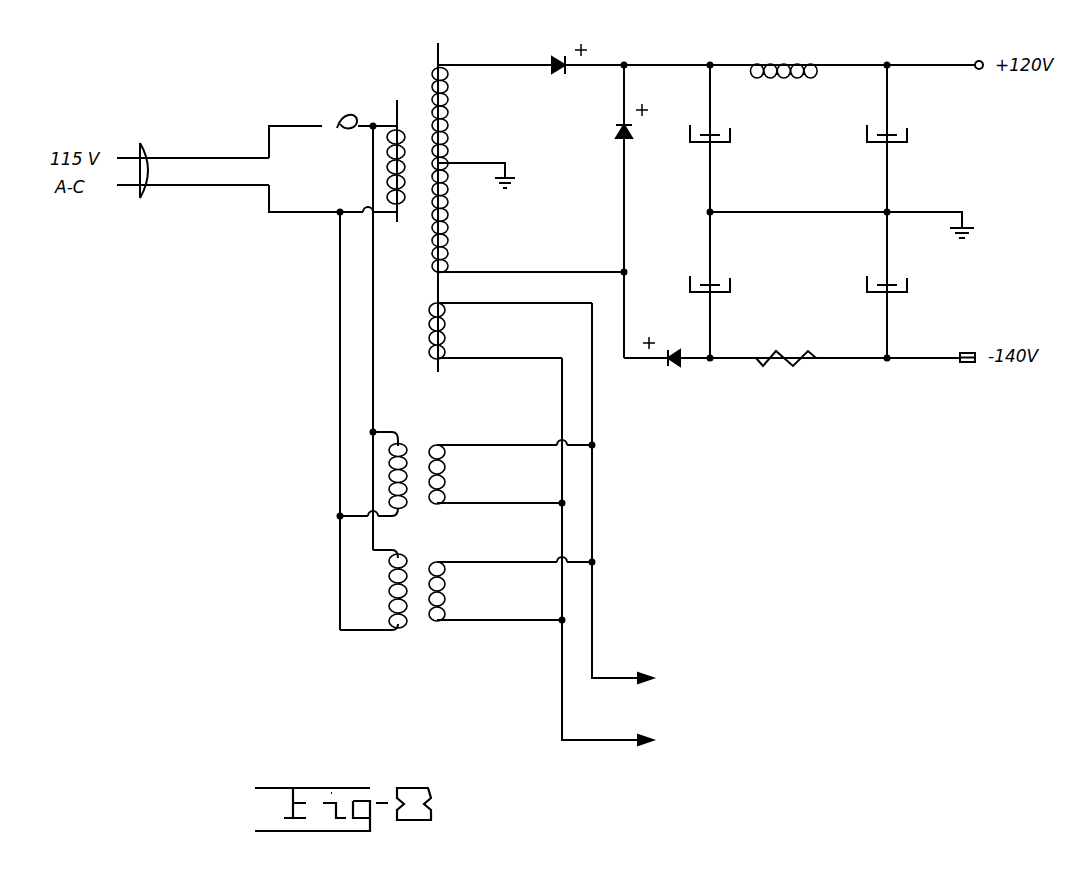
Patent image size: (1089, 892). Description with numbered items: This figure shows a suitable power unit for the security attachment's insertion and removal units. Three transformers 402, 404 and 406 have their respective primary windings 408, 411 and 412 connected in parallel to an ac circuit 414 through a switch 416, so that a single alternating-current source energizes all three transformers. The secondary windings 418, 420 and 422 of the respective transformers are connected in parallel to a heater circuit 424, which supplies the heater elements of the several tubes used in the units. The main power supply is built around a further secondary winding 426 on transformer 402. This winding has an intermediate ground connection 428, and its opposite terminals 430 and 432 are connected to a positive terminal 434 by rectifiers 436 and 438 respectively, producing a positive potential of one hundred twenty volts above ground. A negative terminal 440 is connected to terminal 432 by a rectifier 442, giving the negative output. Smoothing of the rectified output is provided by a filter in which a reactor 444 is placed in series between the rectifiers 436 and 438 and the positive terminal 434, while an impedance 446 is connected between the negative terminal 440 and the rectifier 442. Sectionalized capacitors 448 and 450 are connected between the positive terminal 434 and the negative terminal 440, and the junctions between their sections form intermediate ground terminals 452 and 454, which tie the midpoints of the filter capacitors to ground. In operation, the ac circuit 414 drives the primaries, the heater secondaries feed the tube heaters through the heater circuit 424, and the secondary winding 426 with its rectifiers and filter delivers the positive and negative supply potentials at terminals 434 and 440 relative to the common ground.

The transformer 402 is at (412, 264).
The transformer 404 is at (439, 421).
The transformer 406 is at (442, 609).
The primary winding 408 is at (388, 165).
The primary winding of second transformer 411 is at (386, 468).
The primary winding 412 is at (385, 592).
The ac circuit 414 is at (183, 188).
The switch 416 is at (312, 118).
The secondary winding 418 is at (429, 334).
The secondary winding 420 is at (448, 481).
The secondary winding 422 is at (445, 597).
The heater circuit 424 is at (618, 694).
The secondary winding 426 is at (449, 128).
The intermediate ground connection 428 is at (507, 168).
The terminal 430 is at (441, 63).
The terminal 432 is at (446, 272).
The positive terminal 434 is at (982, 60).
The rectifier 436 is at (556, 70).
The rectifier 438 is at (626, 130).
The negative terminal 440 is at (960, 366).
The rectifier 442 is at (679, 367).
The reactor 444 is at (790, 78).
The impedance 446 is at (786, 370).
The sectionalized capacitor 448 is at (729, 139).
The sectionalized capacitor 450 is at (909, 144).
The intermediate ground terminal 452 is at (712, 212).
The intermediate ground terminal 454 is at (890, 210).